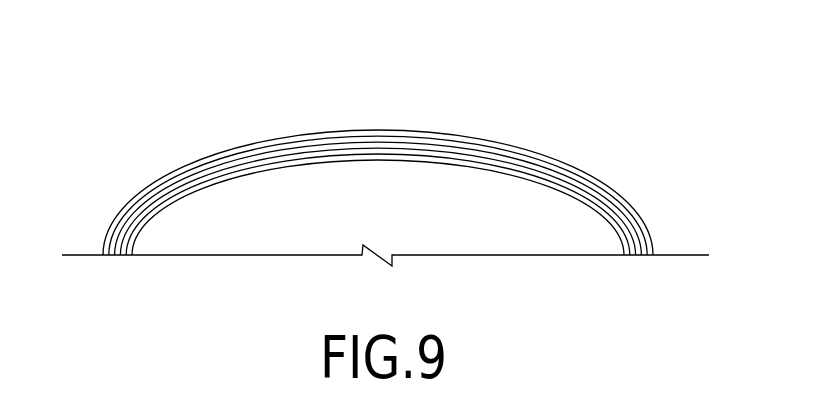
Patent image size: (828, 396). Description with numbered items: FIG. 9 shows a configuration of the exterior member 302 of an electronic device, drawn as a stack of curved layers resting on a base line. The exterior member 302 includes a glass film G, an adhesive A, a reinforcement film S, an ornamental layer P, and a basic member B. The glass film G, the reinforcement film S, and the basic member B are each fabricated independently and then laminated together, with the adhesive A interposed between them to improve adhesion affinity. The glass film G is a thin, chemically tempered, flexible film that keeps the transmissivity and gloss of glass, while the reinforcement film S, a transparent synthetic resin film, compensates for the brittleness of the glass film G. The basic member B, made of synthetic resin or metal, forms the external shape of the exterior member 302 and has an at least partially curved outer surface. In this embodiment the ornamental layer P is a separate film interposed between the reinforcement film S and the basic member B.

The exterior member 302 is at (124, 134).
The glass film G is at (257, 145).
The adhesive A is at (297, 140).
The reinforcement film S is at (348, 150).
The ornamental layer P is at (396, 158).
The basic member B is at (508, 198).